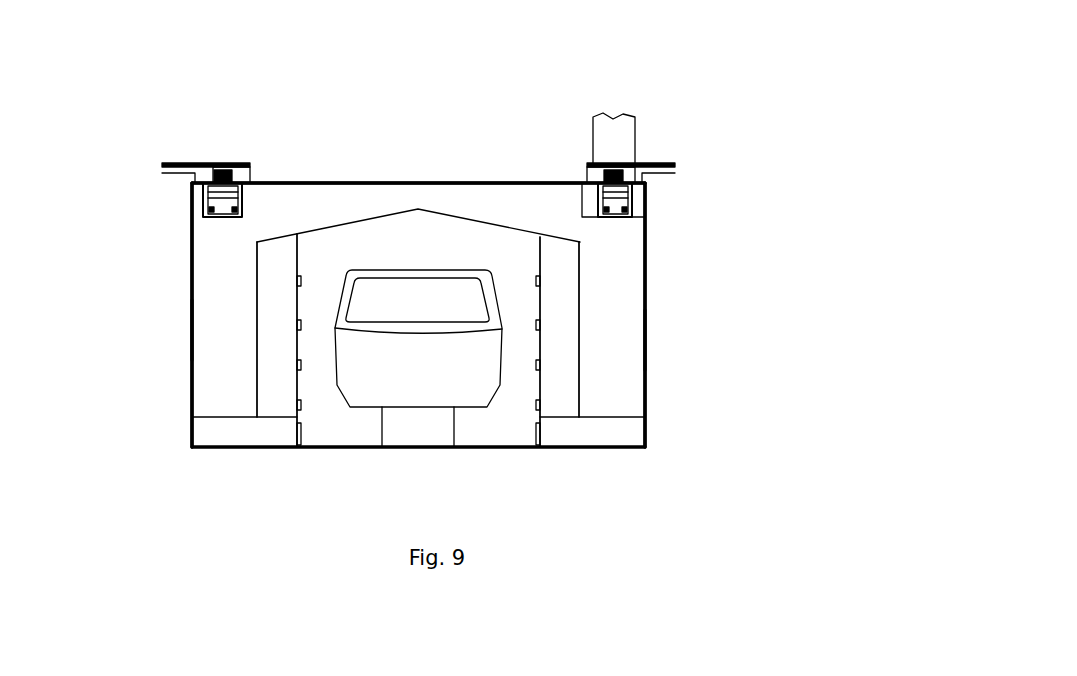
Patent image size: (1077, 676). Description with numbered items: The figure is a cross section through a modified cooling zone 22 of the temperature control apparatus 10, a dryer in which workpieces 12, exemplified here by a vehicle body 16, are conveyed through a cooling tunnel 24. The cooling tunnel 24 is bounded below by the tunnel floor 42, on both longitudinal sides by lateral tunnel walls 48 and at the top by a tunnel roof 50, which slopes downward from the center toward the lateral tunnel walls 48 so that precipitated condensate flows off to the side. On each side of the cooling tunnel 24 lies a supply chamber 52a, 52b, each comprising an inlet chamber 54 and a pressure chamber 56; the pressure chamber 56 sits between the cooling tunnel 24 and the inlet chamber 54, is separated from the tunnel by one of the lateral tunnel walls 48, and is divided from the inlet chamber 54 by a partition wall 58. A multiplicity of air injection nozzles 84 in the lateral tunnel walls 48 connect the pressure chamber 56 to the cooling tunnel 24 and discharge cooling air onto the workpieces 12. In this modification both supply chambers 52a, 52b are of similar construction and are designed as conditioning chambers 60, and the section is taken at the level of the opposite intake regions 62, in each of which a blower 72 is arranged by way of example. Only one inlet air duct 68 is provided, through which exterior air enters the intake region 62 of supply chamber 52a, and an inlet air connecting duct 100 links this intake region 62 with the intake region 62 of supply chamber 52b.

The temperature control apparatus 10 is at (640, 84).
The cooling zone 22 is at (276, 170).
The inlet air connecting duct 100 is at (467, 183).
The cooling tunnel 24 is at (495, 433).
The conditioning chamber 60 is at (178, 239).
The supply chamber 52a is at (659, 302).
The supply chamber 52b is at (177, 282).
The inlet chamber 54 is at (190, 322).
The blower 72 is at (213, 202).
The inlet air duct 68 is at (627, 135).
The tunnel roof 50 is at (413, 209).
The pressure chamber 56 is at (277, 228).
The lateral tunnel wall 48 is at (298, 305).
The partition wall 58 is at (257, 366).
The intake region 62 is at (237, 404).
The air injection nozzle 84 is at (302, 279).
The workpiece 12 is at (398, 316).
The vehicle body 16 is at (437, 328).
The tunnel floor 42 is at (374, 447).